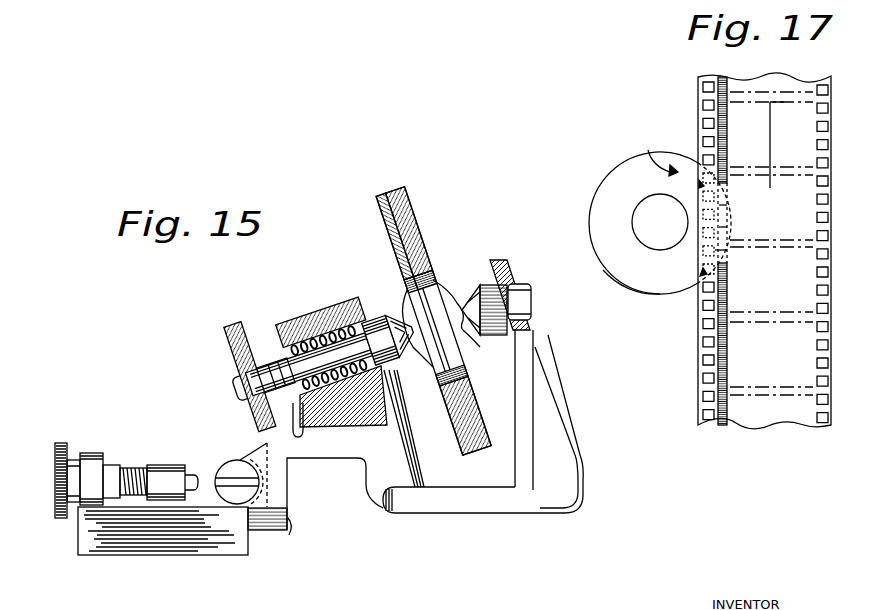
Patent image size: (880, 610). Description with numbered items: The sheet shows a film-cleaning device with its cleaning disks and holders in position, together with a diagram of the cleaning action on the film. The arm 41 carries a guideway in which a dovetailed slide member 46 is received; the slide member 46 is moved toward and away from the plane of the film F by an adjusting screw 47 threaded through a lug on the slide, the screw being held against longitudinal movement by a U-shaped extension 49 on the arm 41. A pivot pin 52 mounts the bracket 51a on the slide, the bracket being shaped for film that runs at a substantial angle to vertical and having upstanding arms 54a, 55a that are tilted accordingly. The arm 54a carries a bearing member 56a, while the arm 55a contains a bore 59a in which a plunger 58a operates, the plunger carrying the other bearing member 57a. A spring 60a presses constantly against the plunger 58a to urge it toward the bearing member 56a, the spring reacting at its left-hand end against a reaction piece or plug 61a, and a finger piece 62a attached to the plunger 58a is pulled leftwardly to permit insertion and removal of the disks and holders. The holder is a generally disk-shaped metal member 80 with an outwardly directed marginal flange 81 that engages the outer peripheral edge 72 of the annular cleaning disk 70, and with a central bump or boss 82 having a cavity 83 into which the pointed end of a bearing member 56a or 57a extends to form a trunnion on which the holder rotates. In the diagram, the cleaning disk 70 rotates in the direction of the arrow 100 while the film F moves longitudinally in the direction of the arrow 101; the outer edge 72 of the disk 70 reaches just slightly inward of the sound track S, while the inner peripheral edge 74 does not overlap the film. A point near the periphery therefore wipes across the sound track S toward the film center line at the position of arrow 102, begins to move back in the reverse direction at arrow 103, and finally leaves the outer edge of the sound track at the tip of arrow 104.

In FIG. 15, the arm 41 is at (192, 548).
In FIG. 15, the slide member 46 is at (288, 527).
In FIG. 15, the adjusting screw 47 is at (135, 470).
In FIG. 15, the U-shaped extension 49 is at (98, 453).
In FIG. 15, the bracket 51a is at (348, 455).
In FIG. 15, the pivot pin 52 is at (233, 472).
In FIG. 15, the upstanding arm 54a is at (537, 337).
In FIG. 15, the upstanding arm 55a is at (338, 302).
In FIG. 15, the bearing member 56a is at (480, 283).
In FIG. 15, the bearing member 57a is at (375, 313).
In FIG. 15, the plunger 58a is at (273, 357).
In FIG. 15, the bore 59a is at (320, 325).
In FIG. 15, the spring 60a is at (283, 352).
In FIG. 15, the reaction piece or plug 61a is at (295, 427).
In FIG. 15, the finger piece 62a is at (228, 348).
In FIG. 15, the cleaning disk 70 is at (393, 213).
In FIG. 17, the cleaning disk 70 is at (604, 184).
In FIG. 17, the outer peripheral edge 72 is at (628, 292).
In FIG. 15, the inner peripheral edge 74 is at (405, 288).
In FIG. 17, the inner peripheral edge 74 is at (640, 226).
In FIG. 15, the disk-shaped metal member 80 is at (418, 227).
In FIG. 15, the marginal flange 81 is at (398, 185).
In FIG. 15, the bump or boss 82 is at (448, 287).
In FIG. 15, the central cavity 83 is at (467, 333).
In FIG. 17, the arrow 100 is at (634, 143).
In FIG. 17, the arrow 101 is at (775, 132).
In FIG. 17, the arrow 102 is at (756, 202).
In FIG. 17, the arrow 103 is at (757, 226).
In FIG. 17, the arrow 104 is at (756, 265).
In FIG. 17, the film F is at (800, 413).
In FIG. 17, the sound track S is at (724, 76).